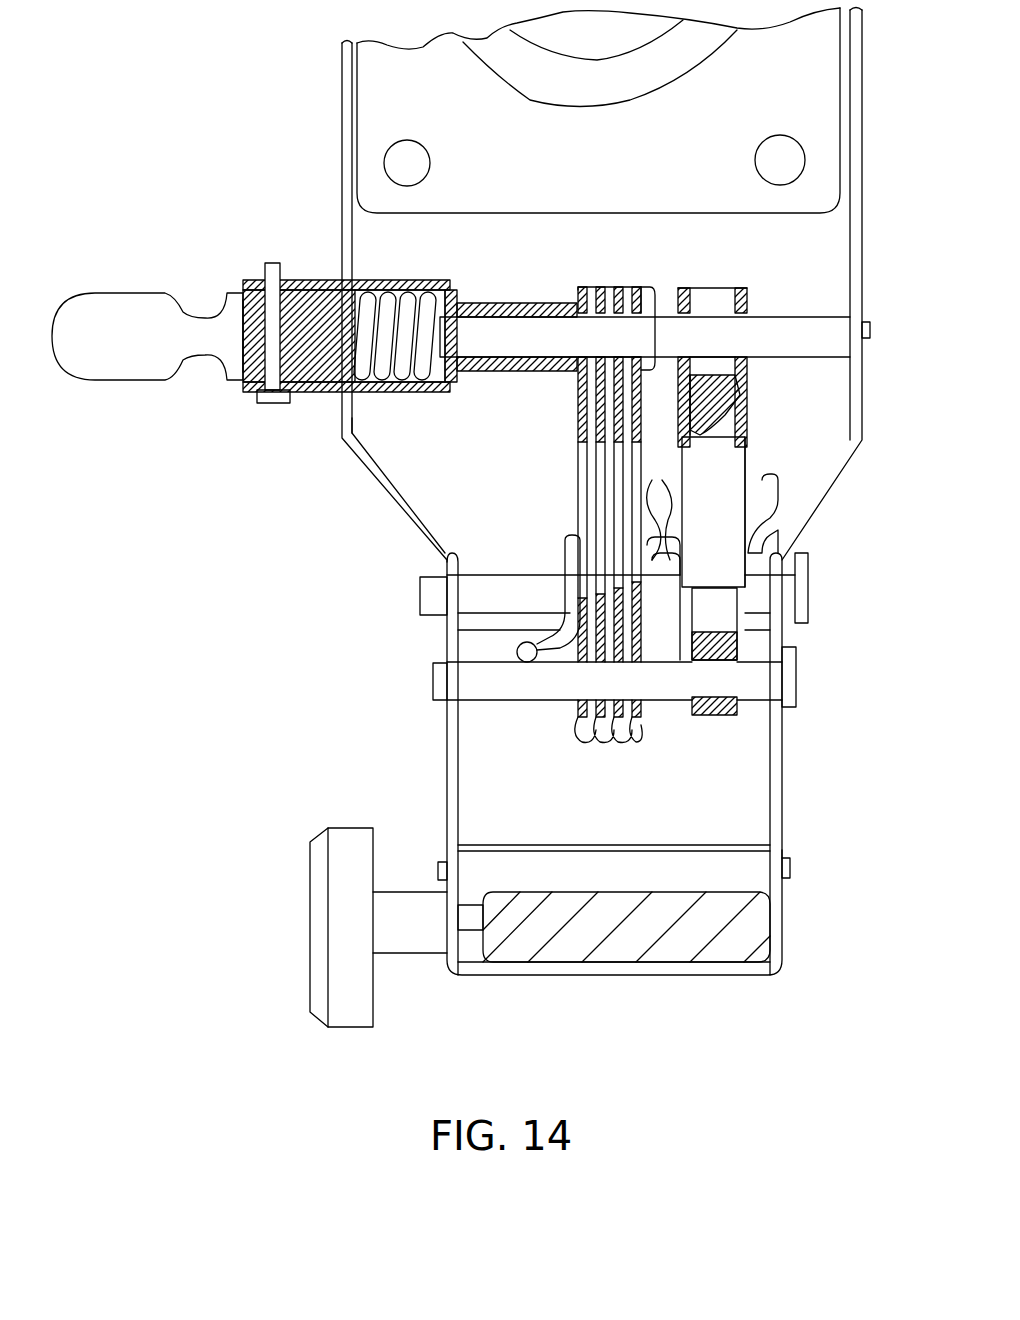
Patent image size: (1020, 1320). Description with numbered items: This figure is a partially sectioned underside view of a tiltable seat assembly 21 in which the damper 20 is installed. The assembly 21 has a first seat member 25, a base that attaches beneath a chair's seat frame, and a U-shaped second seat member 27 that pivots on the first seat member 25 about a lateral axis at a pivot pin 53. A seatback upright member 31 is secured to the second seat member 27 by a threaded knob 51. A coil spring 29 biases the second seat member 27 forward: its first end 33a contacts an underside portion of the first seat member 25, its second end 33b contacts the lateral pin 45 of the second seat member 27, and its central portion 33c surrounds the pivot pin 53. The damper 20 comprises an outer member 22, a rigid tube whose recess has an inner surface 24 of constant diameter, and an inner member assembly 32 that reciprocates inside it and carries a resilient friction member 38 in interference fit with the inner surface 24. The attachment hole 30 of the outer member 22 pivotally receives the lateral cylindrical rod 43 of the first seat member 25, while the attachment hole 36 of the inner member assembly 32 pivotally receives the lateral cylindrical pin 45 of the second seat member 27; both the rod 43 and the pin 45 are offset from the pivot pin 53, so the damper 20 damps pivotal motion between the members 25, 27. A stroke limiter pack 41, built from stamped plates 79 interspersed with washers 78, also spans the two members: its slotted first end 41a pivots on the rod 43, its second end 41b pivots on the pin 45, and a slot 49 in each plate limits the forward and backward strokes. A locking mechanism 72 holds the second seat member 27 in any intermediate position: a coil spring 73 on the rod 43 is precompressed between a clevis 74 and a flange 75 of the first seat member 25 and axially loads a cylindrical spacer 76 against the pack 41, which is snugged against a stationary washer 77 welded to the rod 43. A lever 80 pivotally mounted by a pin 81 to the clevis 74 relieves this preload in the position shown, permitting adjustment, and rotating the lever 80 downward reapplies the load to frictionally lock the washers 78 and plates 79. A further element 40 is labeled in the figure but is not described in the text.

The damper 20 is at (752, 438).
The tiltable seat assembly 21 is at (322, 502).
The outer member 22 is at (725, 509).
The inner surface 24 is at (735, 365).
The first seat member 25 is at (586, 164).
The second seat member 27 is at (785, 772).
The spring 29 is at (677, 665).
The first attachment hole 30 is at (742, 316).
The seatback upright member 31 is at (620, 936).
The inner member assembly 32 is at (727, 620).
The first end of spring 33a is at (770, 492).
The second end of spring 33b is at (517, 652).
The central portion of spring 33c is at (658, 520).
The second attachment hole 36 is at (725, 690).
The resilient friction member 38 is at (748, 405).
The bushing wall 40 is at (690, 392).
The stroke limiter pack 41 is at (577, 422).
The slotted first end of stroke limiter pack 41a is at (645, 282).
The second end of stroke limiter pack 41b is at (578, 722).
The lateral cylindrical rod 43 is at (814, 346).
The lateral cylindrical pin 45 is at (504, 692).
The slot 49 is at (590, 400).
The threaded knob 51 is at (364, 939).
The pivot pin 53 is at (504, 604).
The locking mechanism 72 is at (310, 220).
The coil spring 73 is at (450, 292).
The clevis 74 is at (392, 281).
The flange 75 is at (356, 418).
The cylindrical spacer 76 is at (540, 303).
The stationary washer 77 is at (658, 303).
The washers 78 is at (636, 287).
The plates 79 is at (636, 745).
The lever 80 is at (120, 300).
The pin 81 is at (272, 262).